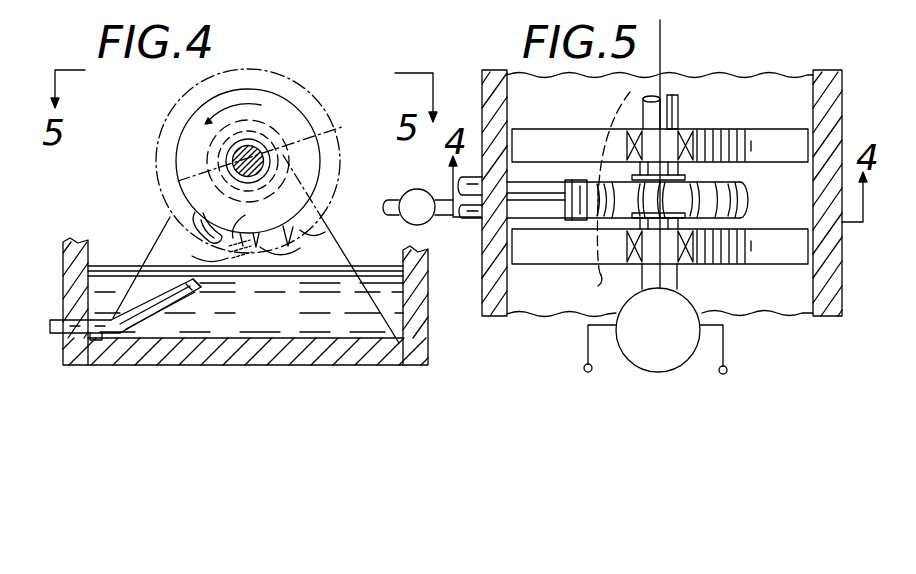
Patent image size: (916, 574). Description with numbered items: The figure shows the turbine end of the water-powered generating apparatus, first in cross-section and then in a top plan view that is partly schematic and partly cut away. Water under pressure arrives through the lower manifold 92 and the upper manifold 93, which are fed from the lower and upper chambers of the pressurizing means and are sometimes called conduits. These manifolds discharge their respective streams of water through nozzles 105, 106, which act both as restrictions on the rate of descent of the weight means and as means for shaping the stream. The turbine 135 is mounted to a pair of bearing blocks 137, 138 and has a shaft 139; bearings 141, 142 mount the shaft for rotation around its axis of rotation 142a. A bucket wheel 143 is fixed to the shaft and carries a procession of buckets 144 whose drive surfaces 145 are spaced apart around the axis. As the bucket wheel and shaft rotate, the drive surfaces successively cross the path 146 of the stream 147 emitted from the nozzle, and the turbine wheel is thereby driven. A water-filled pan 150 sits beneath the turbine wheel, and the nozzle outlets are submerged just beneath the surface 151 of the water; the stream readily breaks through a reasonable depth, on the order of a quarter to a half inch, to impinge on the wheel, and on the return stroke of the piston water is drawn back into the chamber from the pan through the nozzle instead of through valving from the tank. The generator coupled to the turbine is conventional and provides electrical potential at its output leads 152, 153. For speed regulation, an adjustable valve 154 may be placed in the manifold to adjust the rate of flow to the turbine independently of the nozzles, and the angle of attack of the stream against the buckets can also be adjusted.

In FIG. 4, the lower manifold 92 is at (63, 305).
In FIG. 5, the lower manifold 92 is at (472, 218).
In FIG. 5, the upper manifold 93 is at (512, 119).
In FIG. 4, the nozzle 105 is at (185, 292).
In FIG. 5, the nozzle 105 is at (597, 283).
In FIG. 4, the nozzle 106 is at (193, 284).
In FIG. 5, the nozzle 106 is at (626, 128).
In FIG. 4, the turbine 135 is at (326, 90).
In FIG. 5, the turbine 135 is at (760, 97).
In FIG. 5, the bearing block 137 is at (762, 229).
In FIG. 4, the bearing block 138 is at (160, 212).
In FIG. 5, the bearing block 138 is at (757, 129).
In FIG. 5, the shaft 139 is at (680, 108).
In FIG. 5, the bearing 141 is at (706, 268).
In FIG. 4, the bearing 142 is at (281, 153).
In FIG. 5, the bearing 142 is at (630, 100).
In FIG. 5, the axis of rotation 142a is at (665, 47).
In FIG. 4, the bucket wheel 143 is at (257, 90).
In FIG. 4, the buckets 144 is at (300, 252).
In FIG. 5, the buckets 144 is at (750, 194).
In FIG. 4, the drive surfaces 145 is at (217, 218).
In FIG. 4, the path 146 is at (190, 254).
In FIG. 4, the stream 147 is at (259, 230).
In FIG. 4, the water-filled pan 150 is at (428, 346).
In FIG. 5, the water-filled pan 150 is at (842, 285).
In FIG. 4, the surface 151 is at (123, 238).
In FIG. 5, the output lead 152 is at (583, 369).
In FIG. 5, the output lead 153 is at (718, 372).
In FIG. 5, the adjustable valve 154 is at (430, 172).